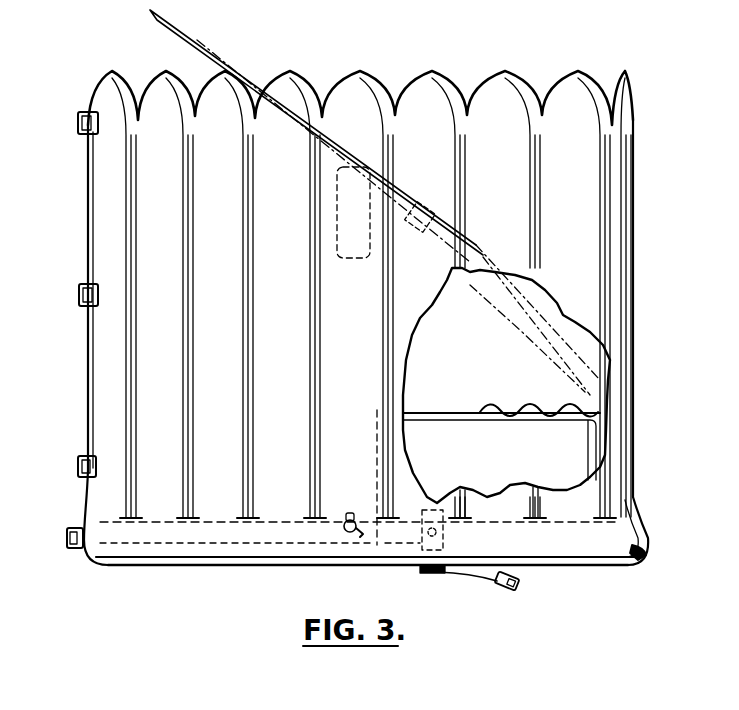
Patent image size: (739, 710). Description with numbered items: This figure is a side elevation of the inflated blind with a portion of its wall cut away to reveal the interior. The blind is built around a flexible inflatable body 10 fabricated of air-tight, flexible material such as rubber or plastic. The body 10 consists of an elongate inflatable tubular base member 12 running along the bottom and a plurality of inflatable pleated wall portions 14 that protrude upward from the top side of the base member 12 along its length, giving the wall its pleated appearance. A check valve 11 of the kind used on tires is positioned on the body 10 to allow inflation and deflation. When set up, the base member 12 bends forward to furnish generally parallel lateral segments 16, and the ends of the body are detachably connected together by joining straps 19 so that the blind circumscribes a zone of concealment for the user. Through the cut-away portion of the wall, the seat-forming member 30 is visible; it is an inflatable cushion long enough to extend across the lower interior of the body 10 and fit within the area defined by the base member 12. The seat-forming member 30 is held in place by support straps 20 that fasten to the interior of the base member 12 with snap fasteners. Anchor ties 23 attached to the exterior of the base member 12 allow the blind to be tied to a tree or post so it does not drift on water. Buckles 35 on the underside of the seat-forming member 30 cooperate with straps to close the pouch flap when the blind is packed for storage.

The flexible inflatable body 10 is at (652, 140).
The check valve 11 is at (345, 531).
The inflatable tubular base member 12 is at (193, 540).
The inflatable pleated wall portions 14 is at (170, 211).
The lateral segments 16 is at (583, 545).
The joining straps 19 is at (78, 122).
The support straps 20 is at (424, 552).
The anchor ties 23 is at (644, 561).
The seat-forming member 30 is at (570, 446).
The buckles 35 is at (519, 585).